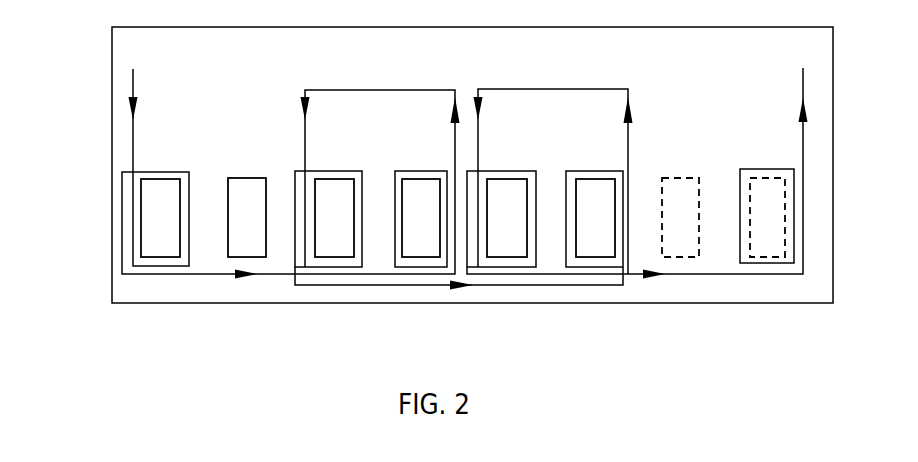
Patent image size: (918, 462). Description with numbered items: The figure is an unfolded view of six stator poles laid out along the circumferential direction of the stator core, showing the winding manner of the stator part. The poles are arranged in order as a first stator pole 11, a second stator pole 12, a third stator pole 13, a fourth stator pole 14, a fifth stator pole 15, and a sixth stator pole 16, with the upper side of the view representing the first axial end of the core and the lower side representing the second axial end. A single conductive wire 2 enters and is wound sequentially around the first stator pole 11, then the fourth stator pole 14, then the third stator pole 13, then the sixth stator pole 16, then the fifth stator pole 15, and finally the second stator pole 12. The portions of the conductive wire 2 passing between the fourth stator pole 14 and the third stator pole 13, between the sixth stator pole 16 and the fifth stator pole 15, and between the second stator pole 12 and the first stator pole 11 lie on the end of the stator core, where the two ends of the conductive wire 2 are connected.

The conductive wire 2 is at (440, 165).
The first stator pole 11 is at (416, 219).
The second stator pole 12 is at (511, 216).
The third stator pole 13 is at (328, 219).
The fourth stator pole 14 is at (421, 219).
The fifth stator pole 15 is at (501, 219).
The sixth stator pole 16 is at (594, 219).